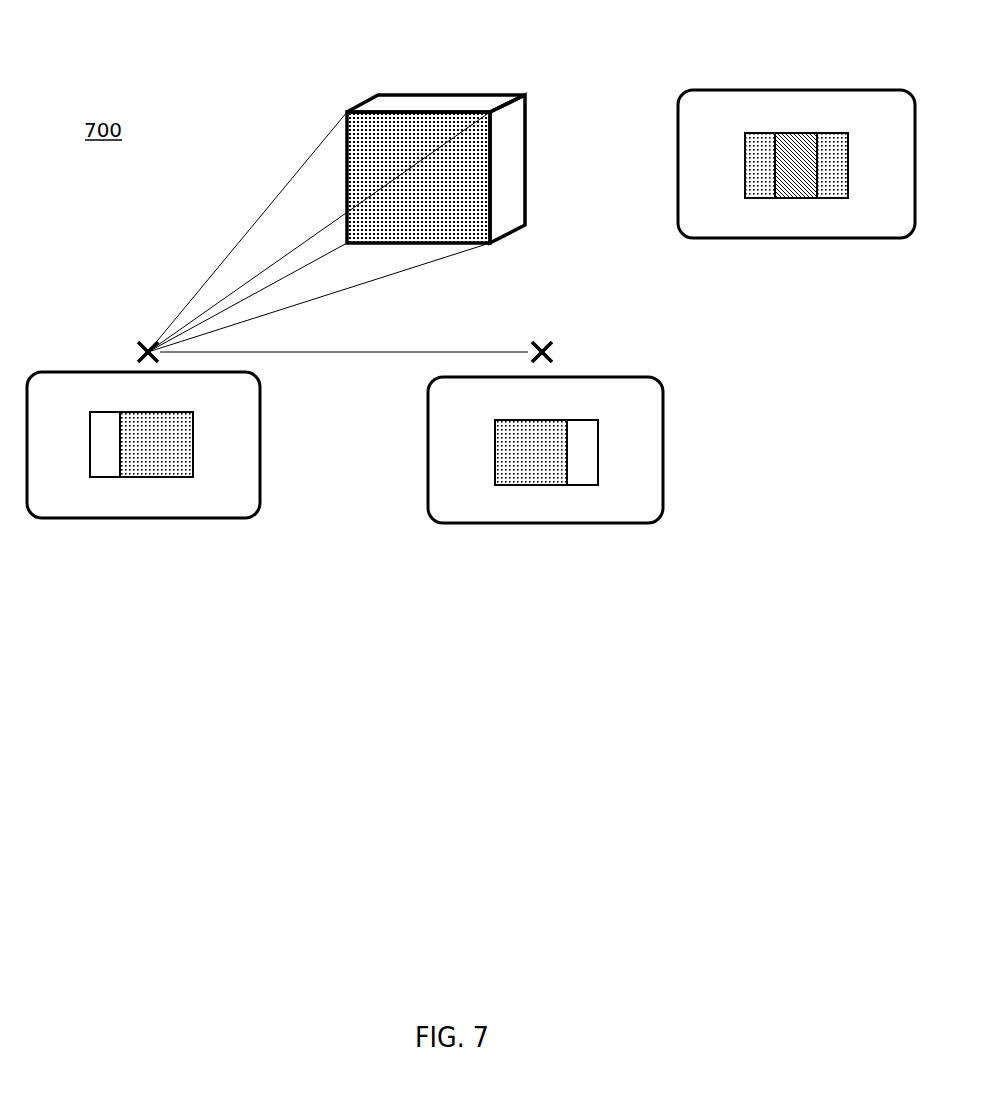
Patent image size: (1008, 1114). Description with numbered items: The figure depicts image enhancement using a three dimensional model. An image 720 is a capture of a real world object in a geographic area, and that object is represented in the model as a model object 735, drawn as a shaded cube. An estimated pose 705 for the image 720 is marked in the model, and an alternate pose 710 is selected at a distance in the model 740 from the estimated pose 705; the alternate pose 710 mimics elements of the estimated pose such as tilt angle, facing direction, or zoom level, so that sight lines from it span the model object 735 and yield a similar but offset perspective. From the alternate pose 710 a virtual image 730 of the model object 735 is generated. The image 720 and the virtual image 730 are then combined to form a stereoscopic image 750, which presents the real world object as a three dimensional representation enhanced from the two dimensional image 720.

The estimated pose 705 is at (557, 350).
The alternate pose 710 is at (150, 332).
The image 720 is at (558, 527).
The virtual image 730 is at (125, 522).
The model object 735 is at (527, 170).
The distance in the model 740 is at (500, 352).
The stereoscopic image 750 is at (803, 85).